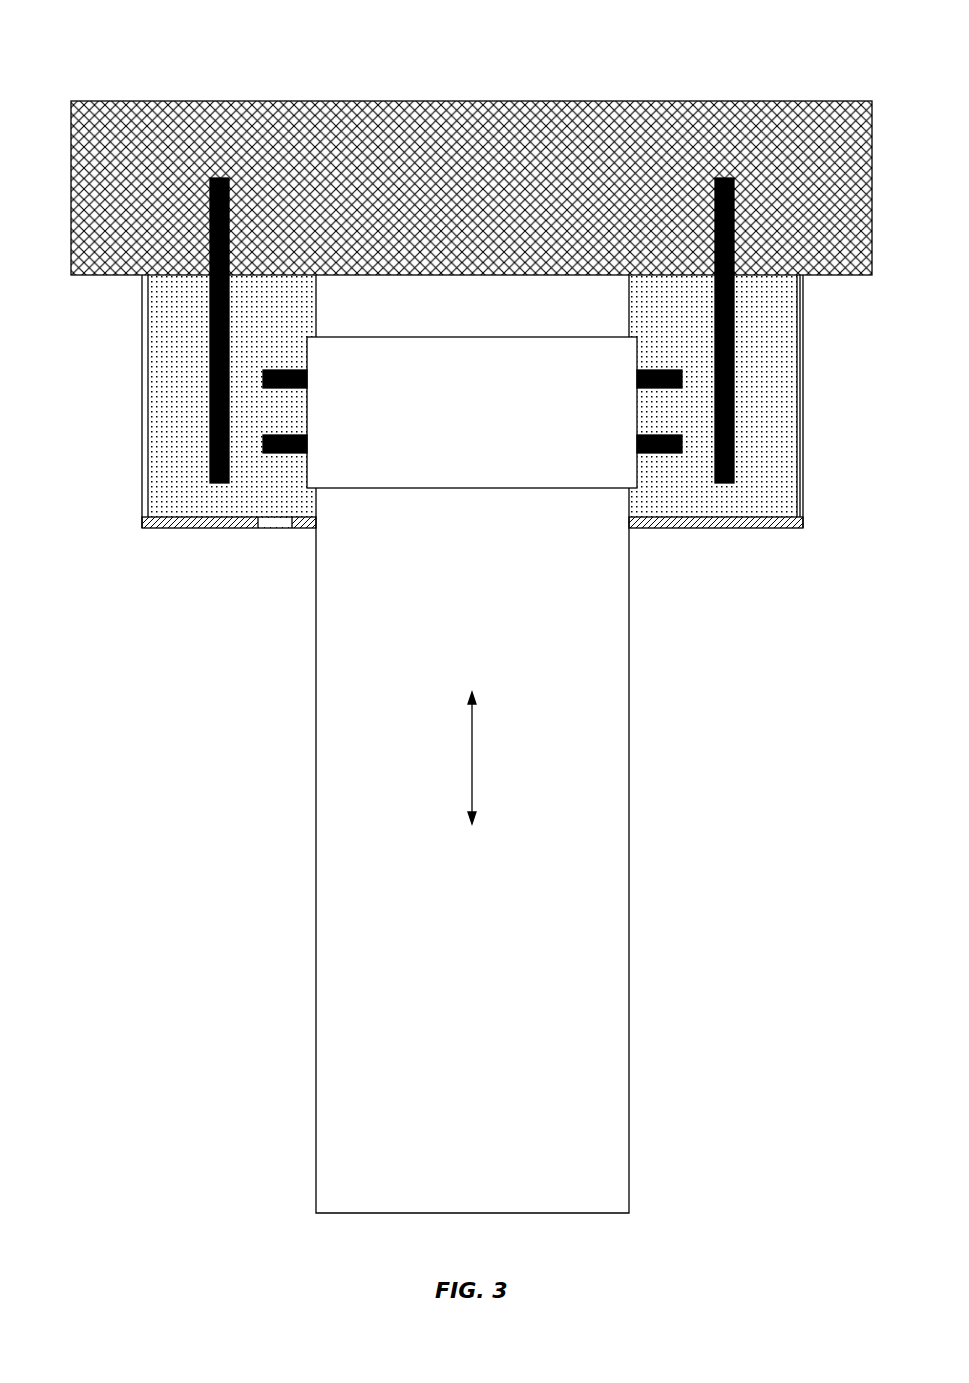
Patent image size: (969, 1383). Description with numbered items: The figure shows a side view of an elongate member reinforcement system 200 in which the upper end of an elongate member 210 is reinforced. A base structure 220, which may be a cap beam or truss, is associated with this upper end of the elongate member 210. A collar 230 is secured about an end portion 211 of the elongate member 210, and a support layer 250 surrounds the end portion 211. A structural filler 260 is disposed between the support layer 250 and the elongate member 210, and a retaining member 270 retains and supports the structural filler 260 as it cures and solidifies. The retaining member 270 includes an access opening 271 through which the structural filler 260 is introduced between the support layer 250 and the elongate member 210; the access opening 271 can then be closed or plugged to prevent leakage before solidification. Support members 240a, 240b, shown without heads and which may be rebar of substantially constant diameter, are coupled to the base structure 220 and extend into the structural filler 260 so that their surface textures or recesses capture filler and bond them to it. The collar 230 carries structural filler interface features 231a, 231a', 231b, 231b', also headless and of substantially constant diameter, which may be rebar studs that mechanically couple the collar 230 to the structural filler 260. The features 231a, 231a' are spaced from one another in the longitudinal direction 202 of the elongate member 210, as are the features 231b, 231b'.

The elongate member reinforcement system 200 is at (120, 54).
The longitudinal direction 202 is at (475, 757).
The elongate member 210 is at (316, 725).
The end portion 211 is at (672, 506).
The base structure 220 is at (112, 276).
The collar 230 is at (471, 502).
The structural filler interface feature 231a is at (275, 362).
The structural filler interface feature 231a' is at (275, 427).
The structural filler interface feature 231b is at (674, 362).
The structural filler interface feature 231b' is at (677, 427).
The support member 240a is at (210, 442).
The support member 240b is at (734, 447).
The support layer 250 is at (141, 386).
The structural filler 260 is at (293, 493).
The retaining member 270 is at (192, 530).
The access opening 271 is at (275, 535).